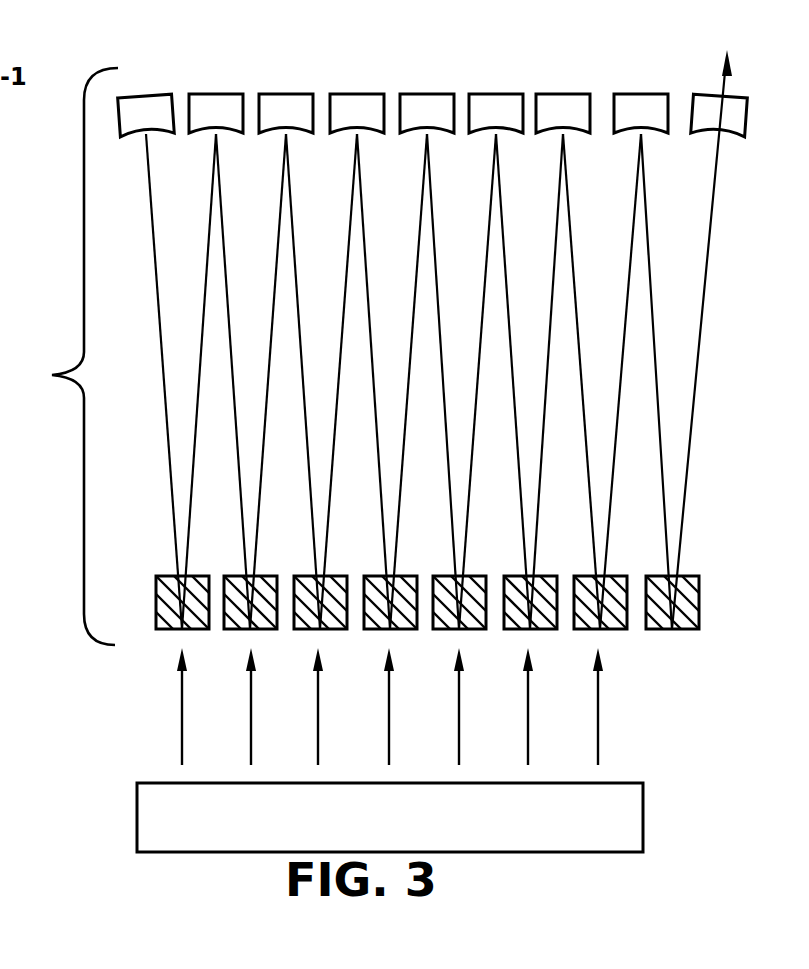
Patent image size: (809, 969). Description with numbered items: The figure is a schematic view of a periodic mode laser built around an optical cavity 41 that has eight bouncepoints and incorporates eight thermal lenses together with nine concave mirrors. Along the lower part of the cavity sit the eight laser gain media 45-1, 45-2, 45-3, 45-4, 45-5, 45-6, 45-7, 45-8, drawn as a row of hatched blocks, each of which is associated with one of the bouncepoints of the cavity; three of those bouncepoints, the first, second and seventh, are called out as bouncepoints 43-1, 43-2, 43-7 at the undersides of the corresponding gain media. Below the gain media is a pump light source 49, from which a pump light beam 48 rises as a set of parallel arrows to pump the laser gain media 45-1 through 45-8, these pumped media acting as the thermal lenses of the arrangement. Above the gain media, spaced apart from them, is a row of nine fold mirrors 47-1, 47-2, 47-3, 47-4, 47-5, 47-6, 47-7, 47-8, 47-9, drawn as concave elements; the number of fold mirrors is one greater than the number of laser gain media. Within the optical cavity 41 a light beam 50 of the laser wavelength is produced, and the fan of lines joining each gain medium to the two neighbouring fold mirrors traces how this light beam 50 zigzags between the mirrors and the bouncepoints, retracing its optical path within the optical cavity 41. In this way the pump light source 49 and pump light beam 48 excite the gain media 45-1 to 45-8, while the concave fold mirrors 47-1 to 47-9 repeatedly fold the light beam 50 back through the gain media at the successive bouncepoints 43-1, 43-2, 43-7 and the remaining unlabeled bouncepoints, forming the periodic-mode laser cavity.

The optical cavity 41 is at (61, 356).
The bouncepoint 43-1 is at (160, 648).
The bouncepoint 43-2 is at (233, 650).
The bouncepoint 43-7 is at (618, 645).
The laser gain medium 45-1 is at (167, 578).
The laser gain medium 45-2 is at (265, 580).
The laser gain medium 45-3 is at (320, 602).
The laser gain medium 45-4 is at (390, 602).
The laser gain medium 45-5 is at (459, 602).
The laser gain medium 45-6 is at (530, 602).
The laser gain medium 45-7 is at (607, 580).
The laser gain medium 45-8 is at (702, 590).
The fold mirror 47-1 is at (145, 97).
The fold mirror 47-2 is at (218, 95).
The fold mirror 47-3 is at (286, 113).
The fold mirror 47-4 is at (357, 113).
The fold mirror 47-5 is at (427, 113).
The fold mirror 47-6 is at (496, 113).
The fold mirror 47-7 is at (563, 113).
The fold mirror 47-8 is at (633, 93).
The fold mirror 47-9 is at (719, 115).
The pump light beam 48 is at (460, 713).
The pump light source 49 is at (617, 782).
The light beam 50 is at (505, 257).